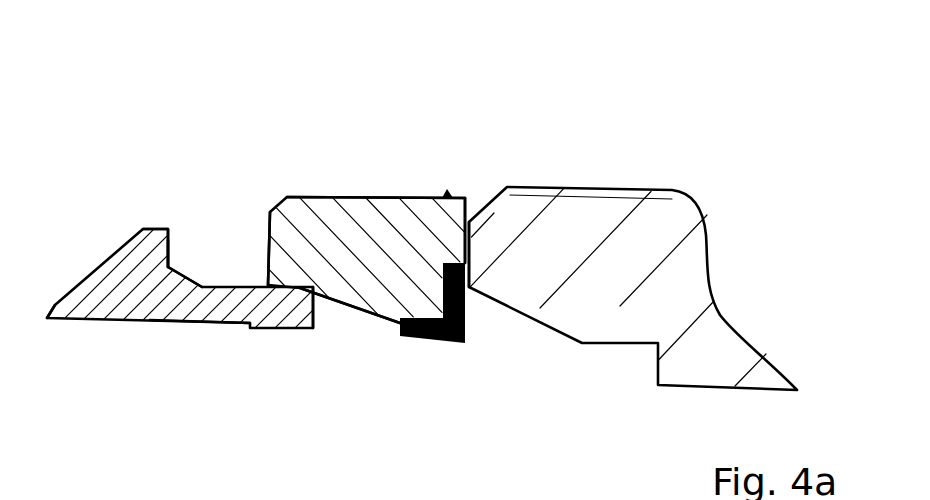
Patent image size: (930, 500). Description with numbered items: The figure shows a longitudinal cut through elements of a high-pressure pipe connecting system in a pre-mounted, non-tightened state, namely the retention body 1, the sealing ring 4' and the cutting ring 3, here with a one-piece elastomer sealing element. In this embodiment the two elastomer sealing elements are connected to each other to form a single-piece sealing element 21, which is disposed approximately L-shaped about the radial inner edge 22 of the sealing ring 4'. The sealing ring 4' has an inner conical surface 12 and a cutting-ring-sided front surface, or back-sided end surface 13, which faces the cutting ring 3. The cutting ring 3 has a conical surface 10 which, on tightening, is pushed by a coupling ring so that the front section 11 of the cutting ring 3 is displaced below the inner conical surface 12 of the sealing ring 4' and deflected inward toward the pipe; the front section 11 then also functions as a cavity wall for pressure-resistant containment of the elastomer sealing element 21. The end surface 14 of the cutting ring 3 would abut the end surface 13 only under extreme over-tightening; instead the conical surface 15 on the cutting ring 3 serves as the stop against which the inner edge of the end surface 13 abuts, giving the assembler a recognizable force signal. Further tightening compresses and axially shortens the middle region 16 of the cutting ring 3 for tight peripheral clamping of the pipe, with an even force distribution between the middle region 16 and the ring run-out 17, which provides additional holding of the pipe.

The retention body 1 is at (592, 223).
The cutting ring 3 is at (145, 227).
The sealing ring 4' is at (376, 124).
The conical surface 10 is at (100, 266).
The front section 11 is at (301, 316).
The inner conical surface 12 is at (359, 313).
The end surface 13 is at (266, 247).
The end surface 14 is at (178, 248).
The conical surface 15 is at (192, 273).
The middle region 16 is at (222, 312).
The ring run-out 17 is at (62, 312).
The single-piece sealing element 21 is at (472, 276).
The radial inner edge 22 is at (392, 270).